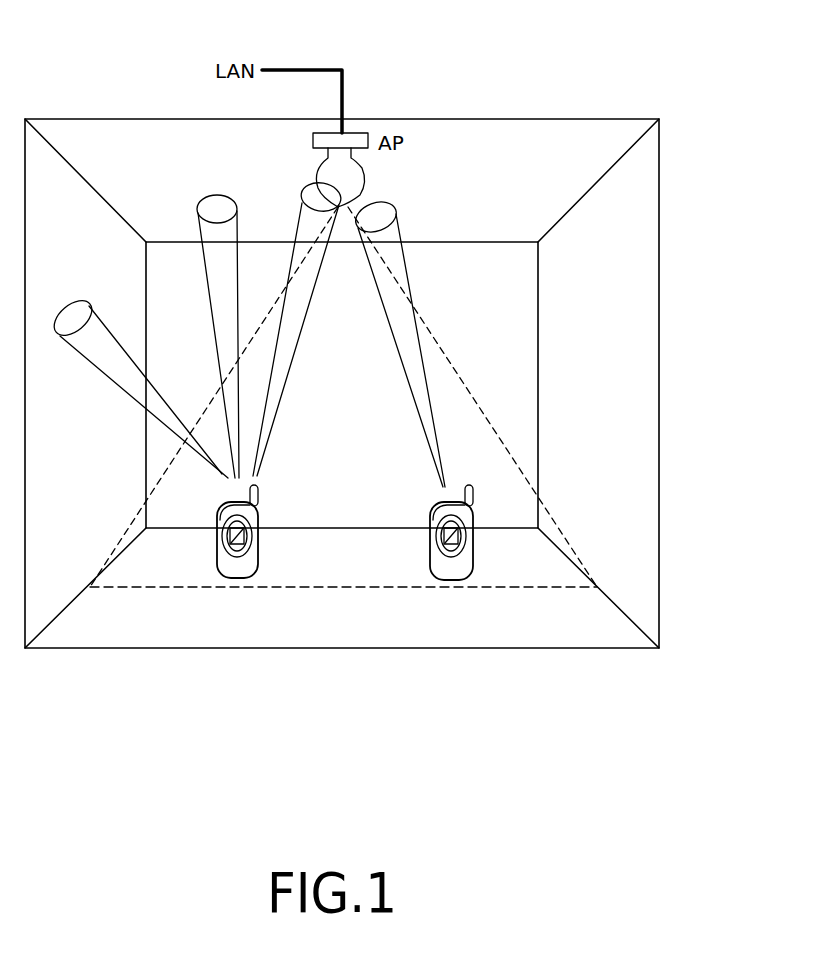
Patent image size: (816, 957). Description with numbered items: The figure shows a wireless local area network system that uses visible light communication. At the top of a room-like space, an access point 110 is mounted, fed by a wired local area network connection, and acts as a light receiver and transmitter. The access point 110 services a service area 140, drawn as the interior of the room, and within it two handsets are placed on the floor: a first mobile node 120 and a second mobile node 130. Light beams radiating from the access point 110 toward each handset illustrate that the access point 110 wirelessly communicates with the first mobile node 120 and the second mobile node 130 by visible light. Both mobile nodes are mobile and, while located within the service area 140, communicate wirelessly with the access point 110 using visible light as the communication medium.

The access point 110 is at (365, 180).
The first mobile node 120 is at (451, 553).
The second mobile node 130 is at (238, 553).
The service area 140 is at (660, 383).